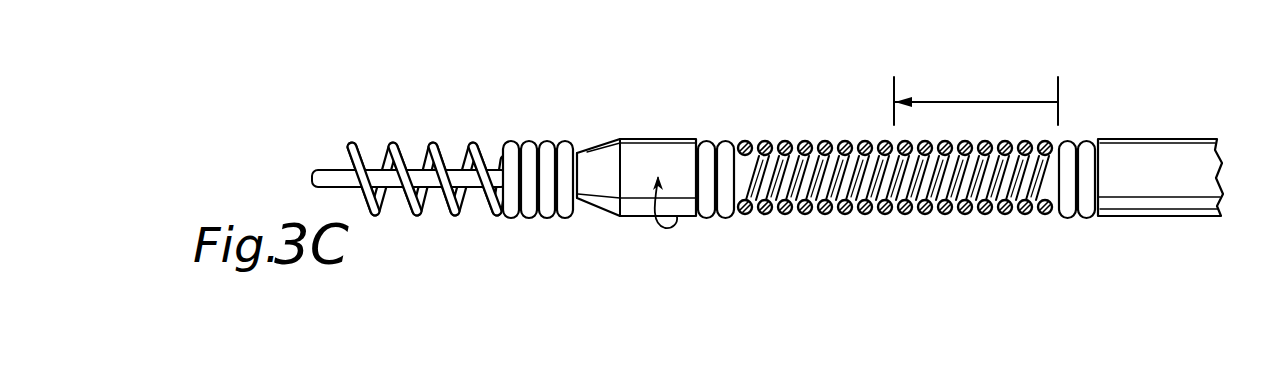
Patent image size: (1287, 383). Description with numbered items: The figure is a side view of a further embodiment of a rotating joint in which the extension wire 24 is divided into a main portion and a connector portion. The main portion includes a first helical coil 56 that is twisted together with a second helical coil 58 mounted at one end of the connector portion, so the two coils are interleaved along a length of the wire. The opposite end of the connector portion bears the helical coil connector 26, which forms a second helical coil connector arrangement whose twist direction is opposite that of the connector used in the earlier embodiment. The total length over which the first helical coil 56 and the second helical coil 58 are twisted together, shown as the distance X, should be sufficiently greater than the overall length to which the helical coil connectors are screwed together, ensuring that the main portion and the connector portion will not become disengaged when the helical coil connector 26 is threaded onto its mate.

The helical coil connector 26 is at (486, 142).
The first helical coil 56 is at (1034, 212).
The second helical coil 58 is at (783, 213).
The extension wire 24 is at (1175, 141).